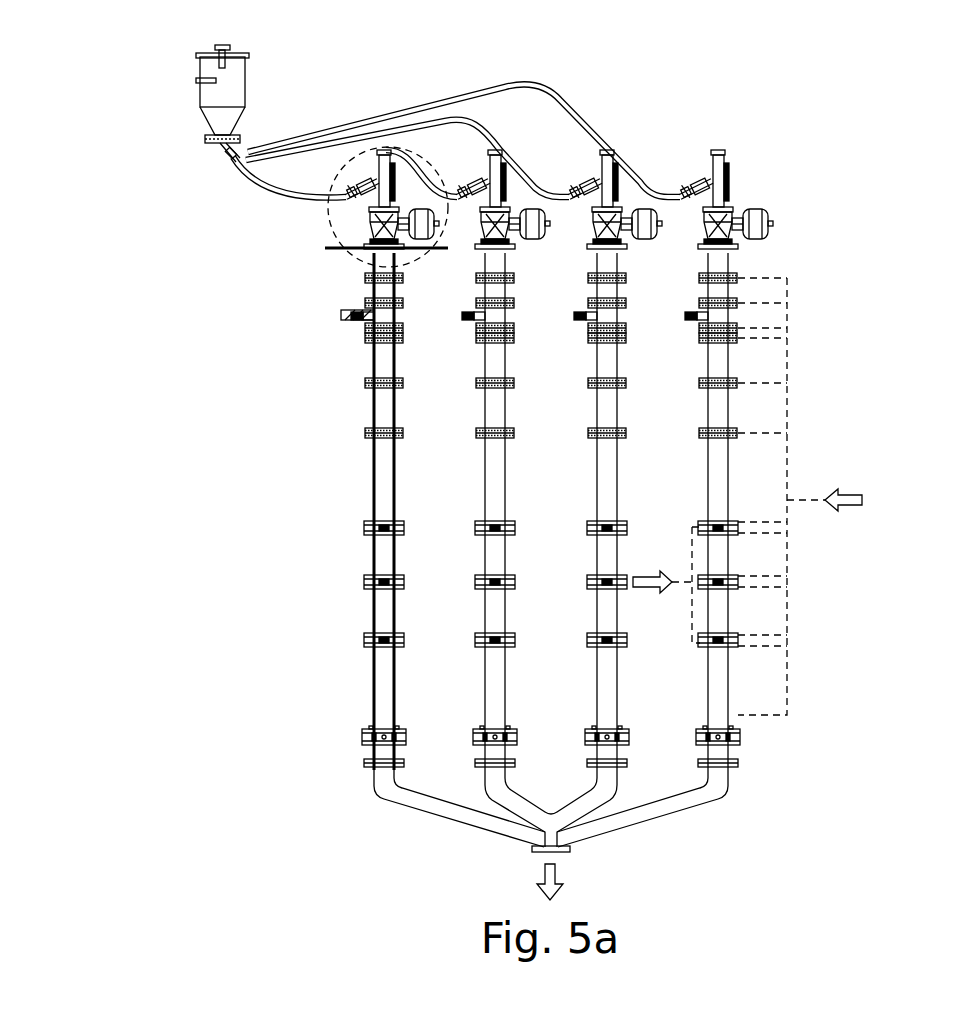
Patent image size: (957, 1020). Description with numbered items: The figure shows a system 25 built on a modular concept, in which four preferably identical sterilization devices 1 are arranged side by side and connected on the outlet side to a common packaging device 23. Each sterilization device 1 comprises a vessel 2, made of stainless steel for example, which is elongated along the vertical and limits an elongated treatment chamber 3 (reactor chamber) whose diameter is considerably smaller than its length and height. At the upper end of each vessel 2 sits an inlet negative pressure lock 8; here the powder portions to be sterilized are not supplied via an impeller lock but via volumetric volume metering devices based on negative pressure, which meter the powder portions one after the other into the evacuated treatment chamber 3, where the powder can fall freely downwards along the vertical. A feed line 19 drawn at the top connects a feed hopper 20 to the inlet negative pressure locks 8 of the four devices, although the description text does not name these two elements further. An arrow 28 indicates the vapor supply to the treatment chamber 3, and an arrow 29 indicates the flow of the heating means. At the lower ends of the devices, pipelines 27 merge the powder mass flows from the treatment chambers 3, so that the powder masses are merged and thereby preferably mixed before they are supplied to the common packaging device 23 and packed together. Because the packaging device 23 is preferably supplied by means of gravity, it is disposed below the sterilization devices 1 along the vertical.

The sterilization device 1 is at (395, 665).
The vessel 2 is at (374, 652).
The treatment chamber 3 is at (720, 447).
The inlet negative pressure lock 8 is at (752, 196).
The feed line 19 is at (600, 128).
The feed hopper 20 is at (208, 91).
The packaging device 23 is at (575, 883).
The system 25 is at (807, 697).
The pipelines 27 is at (478, 825).
The arrow (vapor supply) 28 is at (645, 578).
The arrow (heating means flow) 29 is at (865, 500).